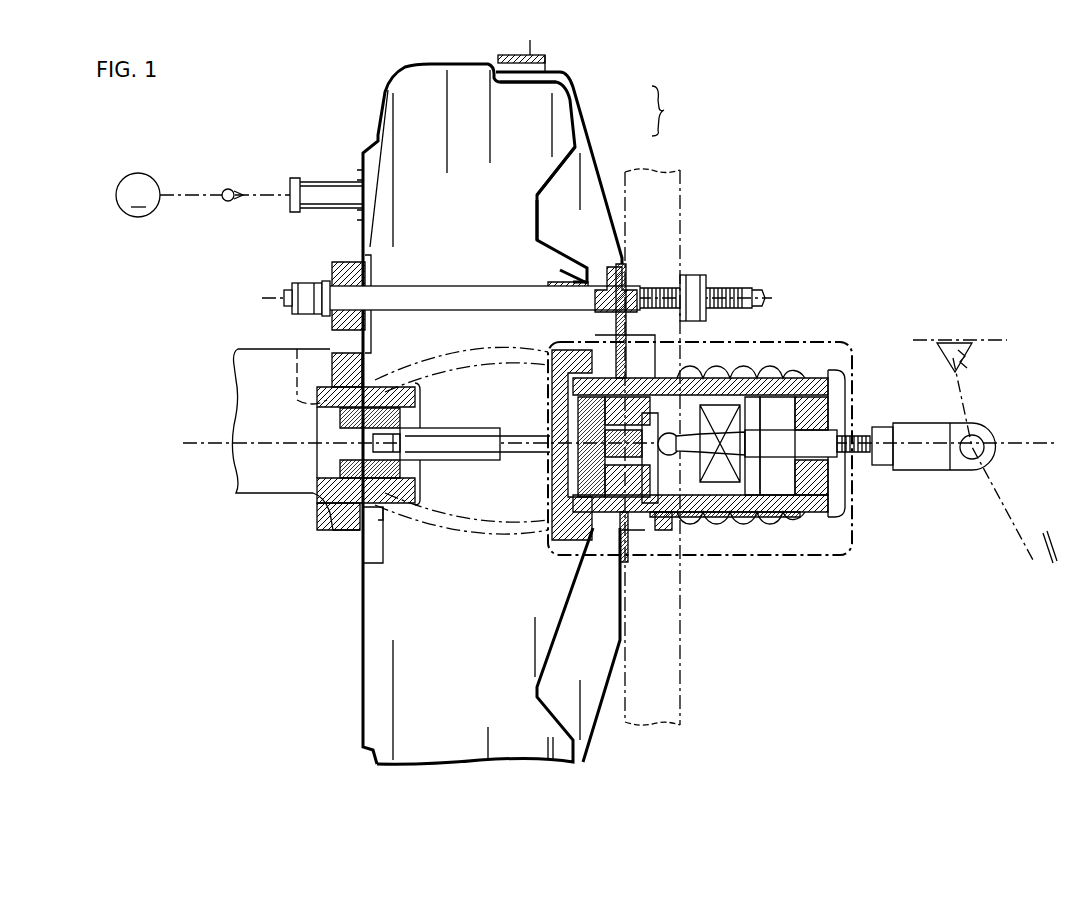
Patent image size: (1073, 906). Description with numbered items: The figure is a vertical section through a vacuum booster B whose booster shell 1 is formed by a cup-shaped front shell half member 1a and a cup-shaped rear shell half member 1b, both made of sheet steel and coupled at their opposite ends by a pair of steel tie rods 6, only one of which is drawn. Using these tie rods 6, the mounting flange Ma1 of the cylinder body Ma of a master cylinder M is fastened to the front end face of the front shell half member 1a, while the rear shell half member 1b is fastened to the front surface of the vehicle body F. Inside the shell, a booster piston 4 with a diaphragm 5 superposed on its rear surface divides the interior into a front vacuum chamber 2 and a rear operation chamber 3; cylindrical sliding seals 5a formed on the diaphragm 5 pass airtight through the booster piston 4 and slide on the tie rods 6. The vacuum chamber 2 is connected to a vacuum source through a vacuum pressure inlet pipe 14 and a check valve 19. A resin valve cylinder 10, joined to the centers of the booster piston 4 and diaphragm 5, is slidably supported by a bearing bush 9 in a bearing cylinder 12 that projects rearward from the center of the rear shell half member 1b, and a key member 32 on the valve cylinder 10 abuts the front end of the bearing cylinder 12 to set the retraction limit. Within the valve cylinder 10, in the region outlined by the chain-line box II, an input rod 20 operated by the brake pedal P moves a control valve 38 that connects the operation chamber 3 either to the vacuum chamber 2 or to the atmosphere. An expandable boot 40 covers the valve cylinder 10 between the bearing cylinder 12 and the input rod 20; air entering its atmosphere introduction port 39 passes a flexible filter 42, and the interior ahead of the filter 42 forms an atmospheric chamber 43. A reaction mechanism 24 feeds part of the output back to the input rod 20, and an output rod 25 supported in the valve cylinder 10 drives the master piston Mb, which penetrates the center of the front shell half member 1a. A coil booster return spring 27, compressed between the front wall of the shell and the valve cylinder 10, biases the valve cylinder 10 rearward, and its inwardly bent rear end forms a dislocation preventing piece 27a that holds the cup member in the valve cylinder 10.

The vacuum booster B is at (368, 125).
The booster shell 1 is at (664, 111).
The front shell half member 1a is at (492, 67).
The rear shell half member 1b is at (592, 160).
The vacuum chamber 2 is at (473, 197).
The operation chamber 3 is at (594, 240).
The booster piston 4 is at (558, 174).
The diaphragm 5 is at (552, 234).
The sliding seal 5a is at (560, 278).
The tie rod 6 is at (449, 290).
The bearing bush 9 is at (665, 523).
The valve cylinder 10 is at (714, 374).
The bearing cylinder 12 is at (661, 358).
The vacuum pressure inlet pipe 14 is at (334, 182).
The check valve 19 is at (226, 189).
The input rod 20 is at (825, 425).
The reaction mechanism 24 is at (577, 482).
The output rod 25 is at (488, 458).
The booster return spring 27 is at (472, 350).
The dislocation preventing piece 27a is at (550, 400).
The key member 32 is at (634, 313).
The control valve 38 is at (707, 520).
The atmosphere introduction port 39 is at (836, 398).
The boot 40 is at (740, 532).
The filter 42 is at (809, 514).
The atmospheric chamber 43 is at (777, 398).
The vehicle body F is at (684, 191).
The master cylinder section II is at (848, 343).
The master cylinder M is at (255, 336).
The cylinder body Ma is at (297, 488).
The mounting flange Ma1 is at (354, 262).
The master piston Mb is at (335, 421).
The brake pedal P is at (1012, 512).